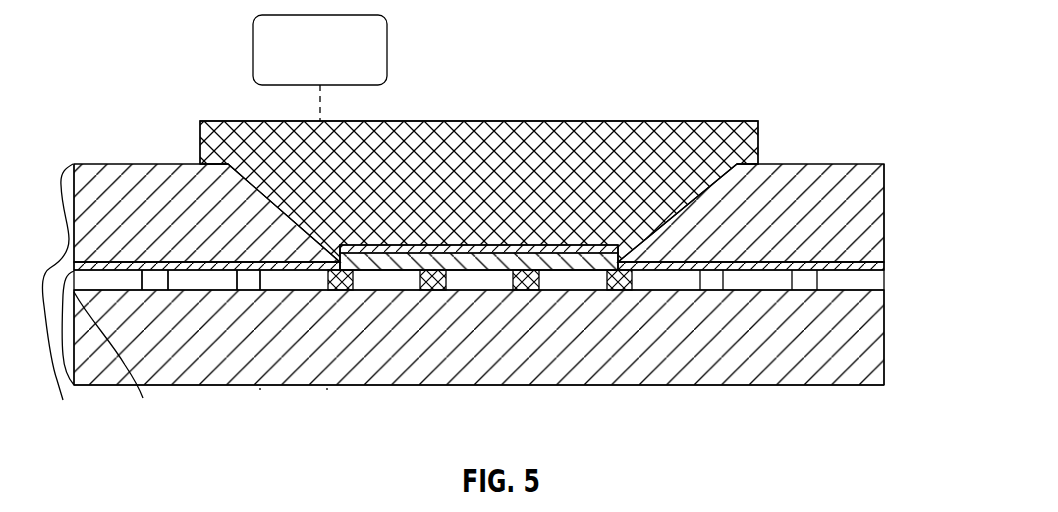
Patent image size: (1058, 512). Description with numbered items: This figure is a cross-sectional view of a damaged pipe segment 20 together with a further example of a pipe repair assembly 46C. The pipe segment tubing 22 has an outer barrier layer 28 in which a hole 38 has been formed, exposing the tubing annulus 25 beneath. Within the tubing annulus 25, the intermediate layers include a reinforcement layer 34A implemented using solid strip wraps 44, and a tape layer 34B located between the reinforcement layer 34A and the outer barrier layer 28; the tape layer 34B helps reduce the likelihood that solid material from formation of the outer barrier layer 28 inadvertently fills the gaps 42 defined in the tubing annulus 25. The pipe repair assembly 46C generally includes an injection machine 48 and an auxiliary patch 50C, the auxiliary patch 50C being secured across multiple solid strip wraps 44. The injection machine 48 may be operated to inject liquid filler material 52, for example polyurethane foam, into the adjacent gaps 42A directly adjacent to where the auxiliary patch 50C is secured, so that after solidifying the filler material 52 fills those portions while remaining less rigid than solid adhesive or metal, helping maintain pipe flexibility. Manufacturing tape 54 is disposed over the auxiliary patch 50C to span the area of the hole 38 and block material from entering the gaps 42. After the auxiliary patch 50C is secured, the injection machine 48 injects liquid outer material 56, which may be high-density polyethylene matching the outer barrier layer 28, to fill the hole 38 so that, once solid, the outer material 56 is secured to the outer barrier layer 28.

The pipe segment 20 is at (828, 62).
The pipe segment tubing 22 is at (463, 301).
The tubing annulus 25 is at (113, 365).
The outer barrier layer 28 is at (887, 163).
The reinforcement layer 34A is at (887, 270).
The tape layer 34B is at (888, 266).
The hole 38 is at (691, 157).
The gaps 42 is at (235, 322).
The adjacent gaps 42A is at (422, 322).
The solid strip wraps 44 is at (260, 388).
The pipe repair assembly 46C is at (677, 31).
The injection machine 48 is at (387, 52).
The auxiliary patch 50C is at (570, 263).
The filler material 52 is at (607, 322).
The manufacturing tape 54 is at (585, 251).
The outer material 56 is at (403, 128).